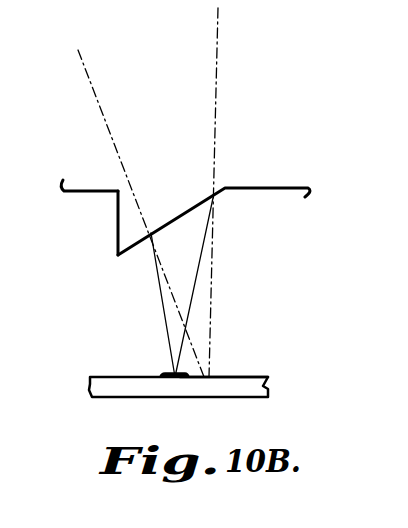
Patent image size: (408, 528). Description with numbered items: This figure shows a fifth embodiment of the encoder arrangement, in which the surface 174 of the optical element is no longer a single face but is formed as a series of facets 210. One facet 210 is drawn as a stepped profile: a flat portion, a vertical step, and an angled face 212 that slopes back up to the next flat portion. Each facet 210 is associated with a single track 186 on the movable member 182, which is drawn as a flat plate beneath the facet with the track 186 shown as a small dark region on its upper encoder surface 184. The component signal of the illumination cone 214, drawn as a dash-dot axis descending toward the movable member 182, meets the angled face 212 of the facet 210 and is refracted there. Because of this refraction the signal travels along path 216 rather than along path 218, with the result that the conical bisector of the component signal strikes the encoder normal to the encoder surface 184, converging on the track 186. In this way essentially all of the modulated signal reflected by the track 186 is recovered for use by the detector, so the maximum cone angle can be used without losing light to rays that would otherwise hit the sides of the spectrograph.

The surface 174 is at (78, 196).
The facet 210 is at (118, 245).
The angled face 212 is at (180, 222).
The illumination cone 214 is at (218, 61).
The path 216 is at (160, 284).
The path 218 is at (209, 317).
The movable member 182 is at (270, 378).
The encoder surface 184 is at (230, 376).
The track 186 is at (161, 373).